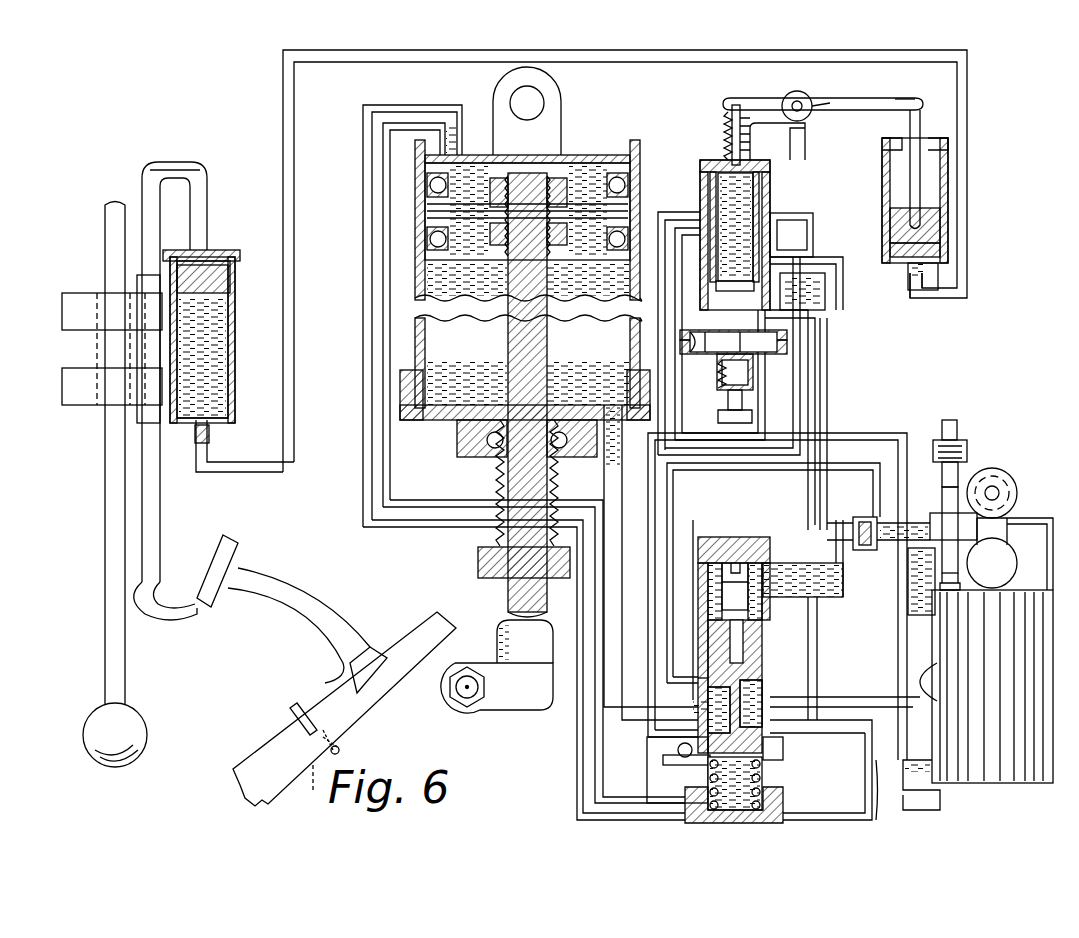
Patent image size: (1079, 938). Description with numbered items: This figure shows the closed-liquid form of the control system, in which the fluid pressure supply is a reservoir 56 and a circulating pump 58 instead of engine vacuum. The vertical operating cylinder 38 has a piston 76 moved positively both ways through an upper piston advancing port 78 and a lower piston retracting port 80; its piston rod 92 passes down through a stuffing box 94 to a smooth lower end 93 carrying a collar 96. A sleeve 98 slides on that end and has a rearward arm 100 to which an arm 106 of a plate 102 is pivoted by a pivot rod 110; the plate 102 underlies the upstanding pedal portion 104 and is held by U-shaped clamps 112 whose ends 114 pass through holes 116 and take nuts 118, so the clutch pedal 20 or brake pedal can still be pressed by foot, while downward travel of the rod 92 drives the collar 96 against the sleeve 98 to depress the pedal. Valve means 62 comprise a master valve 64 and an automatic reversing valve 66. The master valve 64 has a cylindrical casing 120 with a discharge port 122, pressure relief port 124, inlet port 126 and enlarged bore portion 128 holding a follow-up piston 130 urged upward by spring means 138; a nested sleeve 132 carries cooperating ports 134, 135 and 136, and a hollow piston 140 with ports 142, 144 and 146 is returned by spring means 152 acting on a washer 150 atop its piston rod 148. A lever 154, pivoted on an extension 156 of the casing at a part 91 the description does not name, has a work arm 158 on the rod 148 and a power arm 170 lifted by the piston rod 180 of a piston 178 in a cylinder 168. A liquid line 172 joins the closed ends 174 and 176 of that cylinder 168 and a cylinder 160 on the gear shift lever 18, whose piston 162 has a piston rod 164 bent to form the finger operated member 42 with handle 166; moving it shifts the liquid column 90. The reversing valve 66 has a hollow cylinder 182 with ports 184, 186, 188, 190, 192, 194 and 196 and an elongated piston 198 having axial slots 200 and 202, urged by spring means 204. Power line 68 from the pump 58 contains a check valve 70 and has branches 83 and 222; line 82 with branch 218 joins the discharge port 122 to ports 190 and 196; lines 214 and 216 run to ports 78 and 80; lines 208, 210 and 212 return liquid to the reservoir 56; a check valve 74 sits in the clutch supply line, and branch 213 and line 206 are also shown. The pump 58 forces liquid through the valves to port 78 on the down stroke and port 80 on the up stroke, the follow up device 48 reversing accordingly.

The gear shift lever 18 is at (107, 483).
The clutch pedal 20 is at (212, 566).
The operating cylinder 38 is at (420, 258).
The finger operated member 42 is at (152, 534).
The follow up device 48 is at (786, 352).
The reservoir 56 is at (934, 645).
The circulating pump 58 is at (1014, 482).
The valve means 62 is at (853, 428).
The master valve 64 is at (771, 200).
The reversing valve 66 is at (703, 530).
The power line 68 is at (910, 523).
The check valve 70 is at (862, 552).
The check valve 74 is at (968, 452).
The piston 76 is at (425, 200).
The piston advancing port 78 is at (462, 128).
The piston retracting port 80 is at (622, 402).
The line 82 is at (816, 386).
The branch 83 is at (684, 531).
The liquid column 90 is at (898, 283).
The pivot 91 is at (797, 91).
The piston rod 92 is at (492, 470).
The lower end of piston rod 93 is at (502, 600).
The stuffing box 94 is at (496, 462).
The collar 96 is at (478, 560).
The sleeve 98 is at (497, 642).
The arm 100 is at (524, 706).
The plate 102 is at (426, 626).
The pedal portion 104 is at (314, 688).
The arm 106 is at (432, 676).
The pivot rod 110 is at (467, 698).
The clamps 112 is at (290, 707).
The clamp ends 114 is at (340, 753).
The holes 116 is at (304, 786).
The nuts 118 is at (340, 745).
The cylindrical casing 120 is at (770, 190).
The discharge port 122 is at (786, 272).
The pressure relief port 124 is at (729, 350).
The inlet port 126 is at (770, 226).
The enlarged bore portion 128 is at (790, 346).
The piston 130 is at (787, 334).
The sleeve 132 is at (720, 360).
The discharge port 134 is at (780, 252).
The pressure relief port 135 is at (704, 222).
The inlet port 136 is at (771, 214).
The spring means 138 is at (752, 362).
The hollow piston 140 is at (705, 163).
The discharge port 142 is at (790, 290).
The pressure relief port 144 is at (660, 212).
The inlet port 146 is at (770, 188).
The piston rod 148 is at (726, 135).
The washer 150 is at (732, 118).
The spring means 152 is at (762, 132).
The lever 154 is at (823, 100).
The extension 156 is at (806, 143).
The work arm 158 is at (742, 98).
The cylinder 160 is at (230, 330).
The piston 162 is at (228, 293).
The piston rod 164 is at (205, 200).
The handle 166 is at (168, 608).
The cylinder 168 is at (883, 170).
The power arm 170 is at (914, 98).
The liquid line 172 is at (645, 52).
The closed end 174 is at (212, 424).
The closed end 176 is at (931, 277).
The piston 178 is at (950, 222).
The piston rod 180 is at (909, 120).
The hollow cylinder 182 is at (731, 545).
The discharge port 184 is at (665, 776).
The port 186 is at (693, 730).
The power port 188 is at (699, 693).
The power port 190 is at (778, 760).
The port 192 is at (790, 724).
The discharge port 194 is at (790, 699).
The piston operating port 196 is at (770, 568).
The elongated piston 198 is at (760, 656).
The axial slot 200 is at (716, 645).
The elongated axial slot 202 is at (761, 690).
The spring means 204 is at (775, 791).
The line 206 is at (904, 784).
The line 208 is at (933, 676).
The line 210 is at (677, 749).
The line 212 is at (896, 446).
The branch 213 is at (718, 413).
The line 214 is at (363, 483).
The line 216 is at (612, 597).
The branch 218 is at (786, 308).
The branch 222 is at (828, 400).